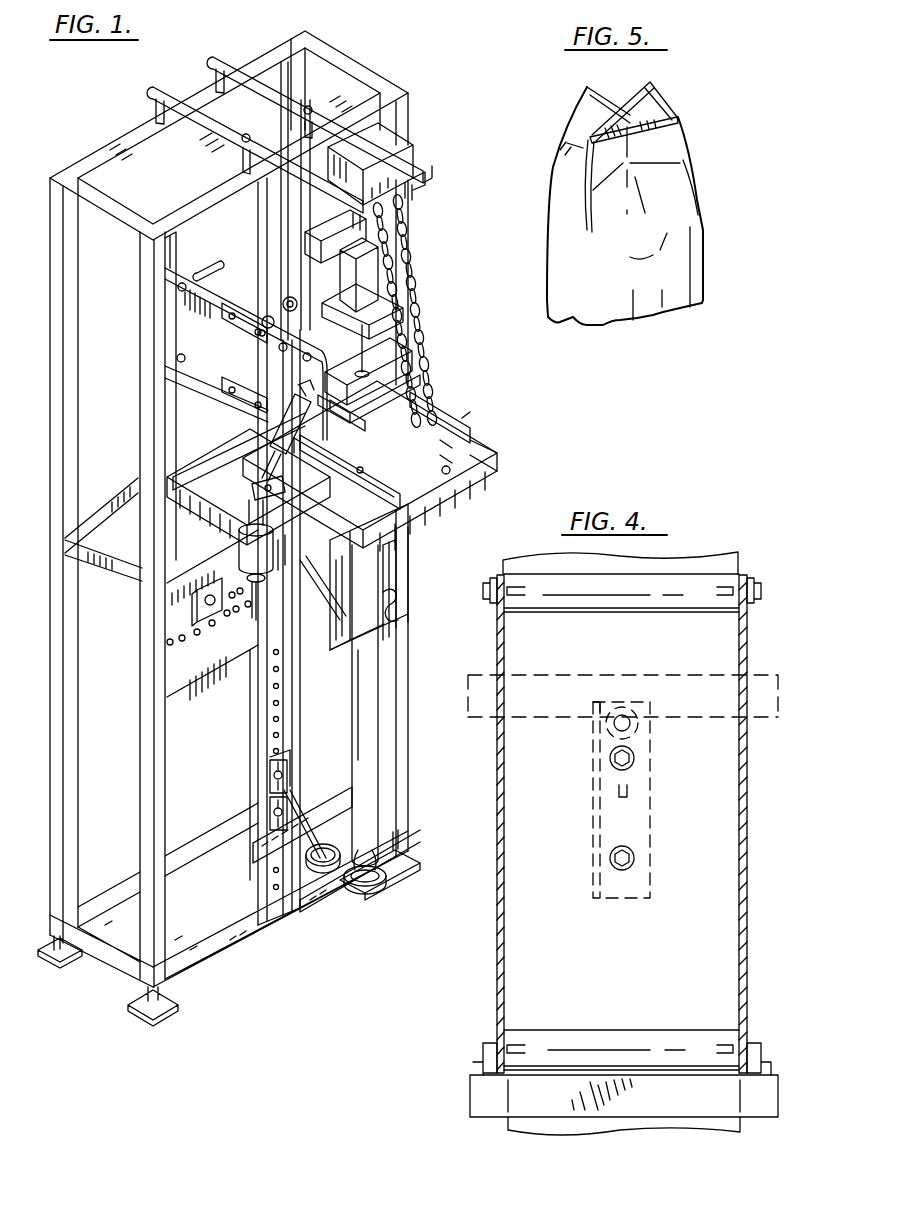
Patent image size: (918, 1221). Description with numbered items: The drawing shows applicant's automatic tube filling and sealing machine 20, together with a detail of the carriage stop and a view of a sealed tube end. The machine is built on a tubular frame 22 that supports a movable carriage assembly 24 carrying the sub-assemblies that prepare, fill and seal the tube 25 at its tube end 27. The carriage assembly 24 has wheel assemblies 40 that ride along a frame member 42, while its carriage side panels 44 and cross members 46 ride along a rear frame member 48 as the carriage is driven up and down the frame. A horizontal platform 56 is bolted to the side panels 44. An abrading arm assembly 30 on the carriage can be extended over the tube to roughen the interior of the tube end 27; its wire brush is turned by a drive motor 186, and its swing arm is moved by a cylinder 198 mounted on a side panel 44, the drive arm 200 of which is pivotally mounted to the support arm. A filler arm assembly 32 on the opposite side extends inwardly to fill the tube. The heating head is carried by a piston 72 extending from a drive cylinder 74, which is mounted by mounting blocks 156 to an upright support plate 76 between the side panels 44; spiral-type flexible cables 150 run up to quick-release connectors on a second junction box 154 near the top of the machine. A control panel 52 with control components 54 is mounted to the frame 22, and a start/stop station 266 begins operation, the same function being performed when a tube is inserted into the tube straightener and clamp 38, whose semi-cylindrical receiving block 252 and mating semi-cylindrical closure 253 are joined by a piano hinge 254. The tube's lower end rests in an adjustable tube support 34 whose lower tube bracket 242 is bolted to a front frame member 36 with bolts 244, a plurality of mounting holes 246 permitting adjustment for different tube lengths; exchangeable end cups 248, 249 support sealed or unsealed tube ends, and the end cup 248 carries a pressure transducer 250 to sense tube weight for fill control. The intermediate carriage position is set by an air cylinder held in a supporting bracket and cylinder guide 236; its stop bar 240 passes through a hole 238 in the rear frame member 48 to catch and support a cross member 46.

In FIG. 1, the automatic tube filling and sealing machine 20 is at (400, 65).
In FIG. 1, the tubular frame 22 is at (84, 167).
In FIG. 1, the carriage assembly 24 is at (488, 431).
In FIG. 1, the tube 25 is at (368, 735).
In FIG. 5, the tube 25 is at (634, 319).
In FIG. 5, the tube end 27 is at (663, 137).
In FIG. 1, the abrading arm assembly 30 is at (200, 588).
In FIG. 1, the filler arm assembly 32 is at (474, 419).
In FIG. 1, the adjustable tube support 34 is at (334, 893).
In FIG. 1, the frame member 36 is at (267, 732).
In FIG. 1, the tube straightener and clamp 38 is at (389, 589).
In FIG. 1, the wheel assemblies 40 is at (244, 386).
In FIG. 1, the frame member 42 is at (194, 268).
In FIG. 1, the carriage side panels 44 is at (168, 307).
In FIG. 4, the carriage side panels 44 is at (497, 898).
In FIG. 1, the cross members 46 is at (200, 284).
In FIG. 4, the cross members 46 is at (668, 606).
In FIG. 1, the rear frame member 48 is at (182, 182).
In FIG. 4, the rear frame member 48 is at (700, 560).
In FIG. 1, the control panel 52 is at (220, 663).
In FIG. 1, the control components 54 is at (218, 615).
In FIG. 1, the horizontal platform 56 is at (489, 440).
In FIG. 1, the piston 72 is at (340, 347).
In FIG. 1, the drive cylinder 74 is at (376, 292).
In FIG. 1, the support plate 76 is at (393, 343).
In FIG. 1, the spiral-type flexible cables 150 is at (408, 254).
In FIG. 1, the second junction box 154 is at (409, 160).
In FIG. 1, the mounting blocks 156 is at (404, 228).
In FIG. 1, the drive motor 186 is at (240, 537).
In FIG. 1, the cylinder 198 is at (281, 401).
In FIG. 1, the drive arm 200 is at (240, 455).
In FIG. 4, the supporting bracket and cylinder guide 236 is at (595, 788).
In FIG. 4, the hole 238 is at (618, 727).
In FIG. 4, the stop bar 240 is at (633, 725).
In FIG. 1, the lower tube bracket 242 is at (366, 903).
In FIG. 1, the bolts 244 is at (270, 810).
In FIG. 1, the mounting holes 246 is at (271, 717).
In FIG. 1, the end cup 248 is at (388, 891).
In FIG. 1, the end cup 249 is at (318, 893).
In FIG. 1, the pressure transducer 250 is at (375, 892).
In FIG. 1, the semi-cylindrical receiving block 252 is at (332, 617).
In FIG. 1, the semi-cylindrical closure 253 is at (384, 636).
In FIG. 1, the piano hinge 254 is at (399, 547).
In FIG. 1, the start/stop station 266 is at (396, 603).